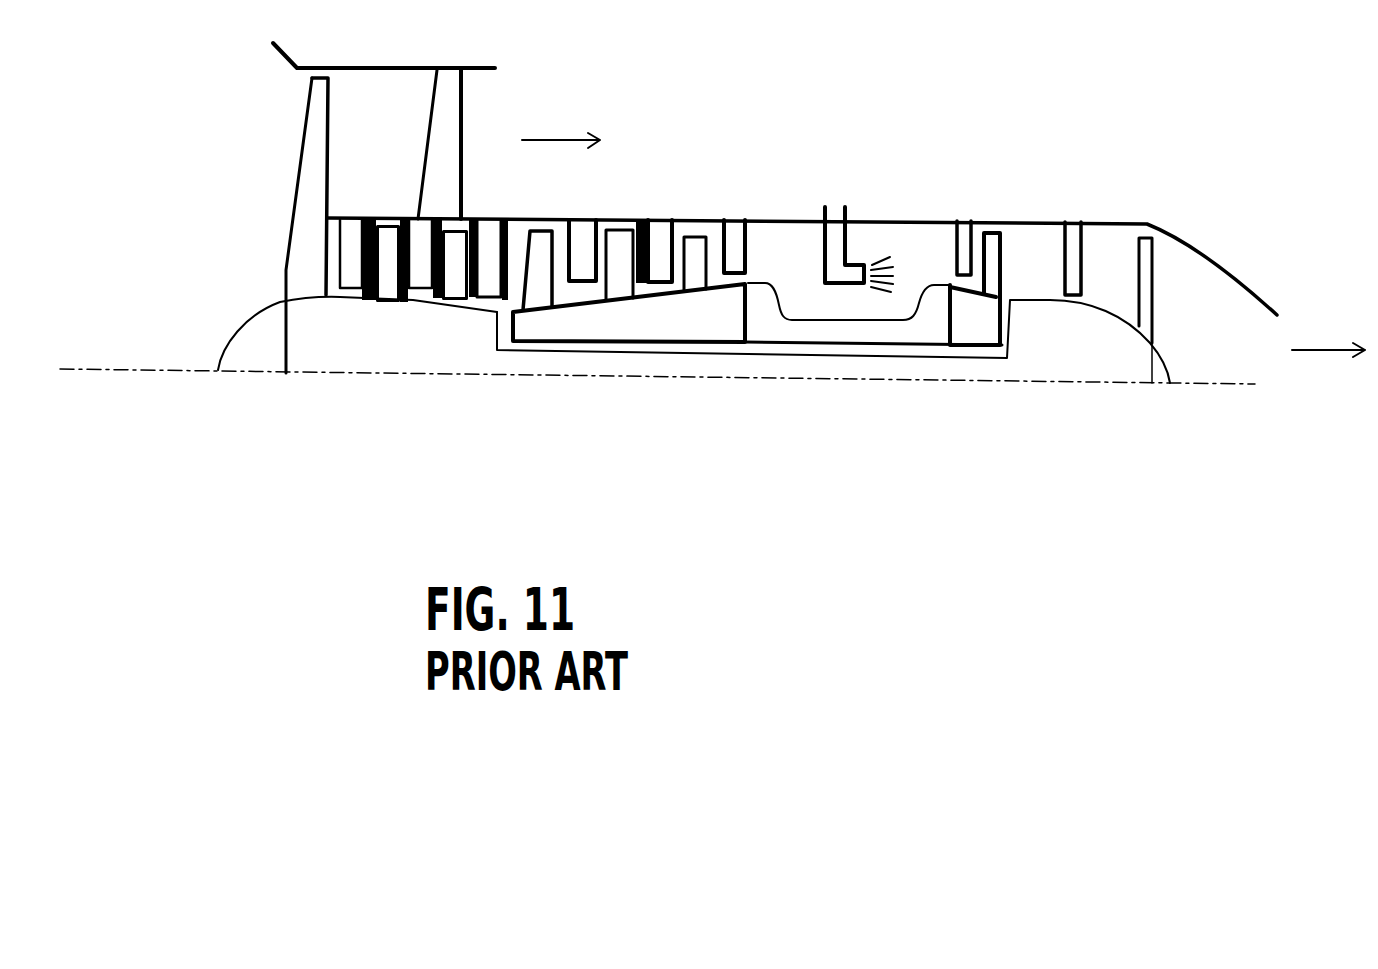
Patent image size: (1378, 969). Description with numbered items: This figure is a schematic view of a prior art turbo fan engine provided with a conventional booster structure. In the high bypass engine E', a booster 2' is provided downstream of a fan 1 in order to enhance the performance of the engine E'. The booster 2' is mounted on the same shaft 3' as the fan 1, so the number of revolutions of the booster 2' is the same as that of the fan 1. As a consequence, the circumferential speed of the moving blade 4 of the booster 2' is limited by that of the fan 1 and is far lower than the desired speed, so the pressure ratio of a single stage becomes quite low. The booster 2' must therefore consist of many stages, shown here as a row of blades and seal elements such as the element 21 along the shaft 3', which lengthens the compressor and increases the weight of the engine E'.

The fan 1 is at (292, 205).
The booster 2' is at (402, 143).
The seal segment 21 is at (340, 262).
The moving blade 4 is at (370, 262).
The shaft 3' is at (757, 374).
The high bypass engine E' is at (900, 205).